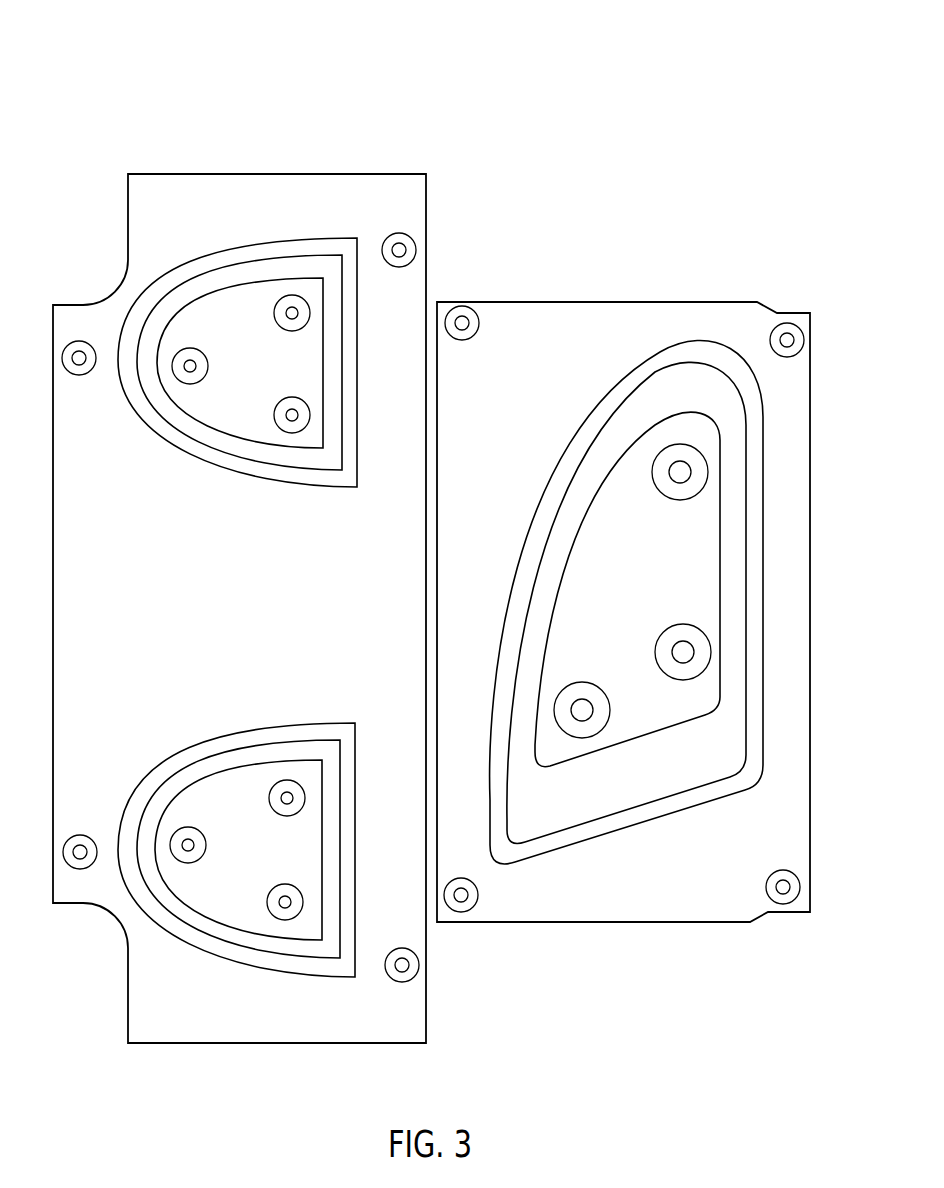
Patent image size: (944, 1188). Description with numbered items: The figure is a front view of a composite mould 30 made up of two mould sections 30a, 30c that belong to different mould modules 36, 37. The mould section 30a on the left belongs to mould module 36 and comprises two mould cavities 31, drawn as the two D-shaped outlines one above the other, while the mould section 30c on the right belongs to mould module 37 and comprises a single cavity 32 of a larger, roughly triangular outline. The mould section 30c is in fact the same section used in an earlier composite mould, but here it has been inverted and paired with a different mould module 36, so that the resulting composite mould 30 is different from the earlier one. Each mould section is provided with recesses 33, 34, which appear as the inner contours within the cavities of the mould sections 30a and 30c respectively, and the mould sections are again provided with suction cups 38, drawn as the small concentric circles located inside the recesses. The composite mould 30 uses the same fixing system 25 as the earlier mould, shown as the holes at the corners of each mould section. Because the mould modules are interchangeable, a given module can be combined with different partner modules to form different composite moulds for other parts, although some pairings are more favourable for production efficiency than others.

The composite mould 30 is at (487, 112).
The mould section 30a is at (197, 192).
The mould section 30c is at (710, 318).
The fixing system 25 is at (406, 242).
The mould cavities 31 is at (140, 395).
The cavity 32 is at (736, 503).
The recesses 33 is at (212, 318).
The recesses 34 is at (703, 690).
The mould module 36 is at (281, 158).
The mould module 37 is at (629, 282).
The suction cups 38 is at (293, 305).